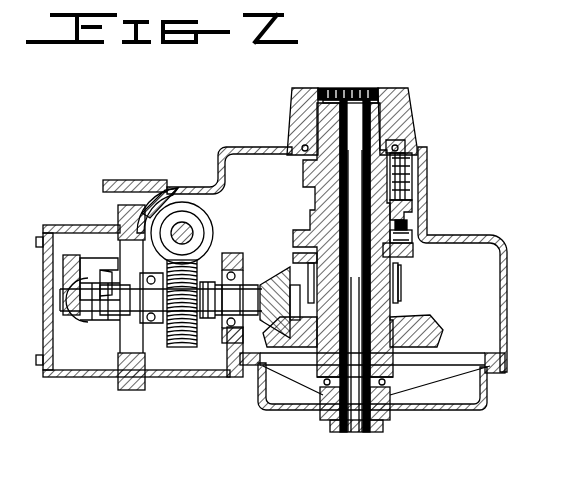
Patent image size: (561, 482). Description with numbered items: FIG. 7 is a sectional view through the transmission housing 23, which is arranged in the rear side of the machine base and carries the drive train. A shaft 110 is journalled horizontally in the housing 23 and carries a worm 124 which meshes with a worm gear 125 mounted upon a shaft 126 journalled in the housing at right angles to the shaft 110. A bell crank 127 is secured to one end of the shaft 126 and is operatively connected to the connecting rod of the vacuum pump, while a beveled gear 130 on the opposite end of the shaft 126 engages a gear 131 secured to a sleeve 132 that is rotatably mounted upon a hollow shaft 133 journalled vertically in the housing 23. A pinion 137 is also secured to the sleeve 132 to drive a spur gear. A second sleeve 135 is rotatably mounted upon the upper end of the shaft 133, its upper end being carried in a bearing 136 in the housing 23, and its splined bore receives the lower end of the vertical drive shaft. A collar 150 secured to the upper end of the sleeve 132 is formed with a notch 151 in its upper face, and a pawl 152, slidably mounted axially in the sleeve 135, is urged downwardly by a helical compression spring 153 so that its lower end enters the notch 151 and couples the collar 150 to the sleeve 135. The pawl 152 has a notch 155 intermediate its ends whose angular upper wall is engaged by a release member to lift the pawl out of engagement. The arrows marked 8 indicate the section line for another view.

The section line 8- 8 is at (87, 217).
The transmission housing 23 is at (198, 377).
The shaft 110 is at (192, 230).
The worm 124 is at (205, 239).
The worm gear 125 is at (173, 342).
The shaft 126 is at (244, 272).
The bell crank 127 is at (118, 322).
The beveled gear 130 is at (279, 273).
The gear 131 is at (442, 321).
The sleeve 132 is at (400, 292).
The hollow shaft 133 is at (356, 432).
The second sleeve 135 is at (317, 188).
The bearing 136 is at (410, 134).
The pinion 137 is at (399, 280).
The collar 150 is at (413, 252).
The notch 151 is at (412, 245).
The pawl 152 is at (408, 207).
The helical compression spring 153 is at (412, 160).
The notch 155 is at (412, 227).